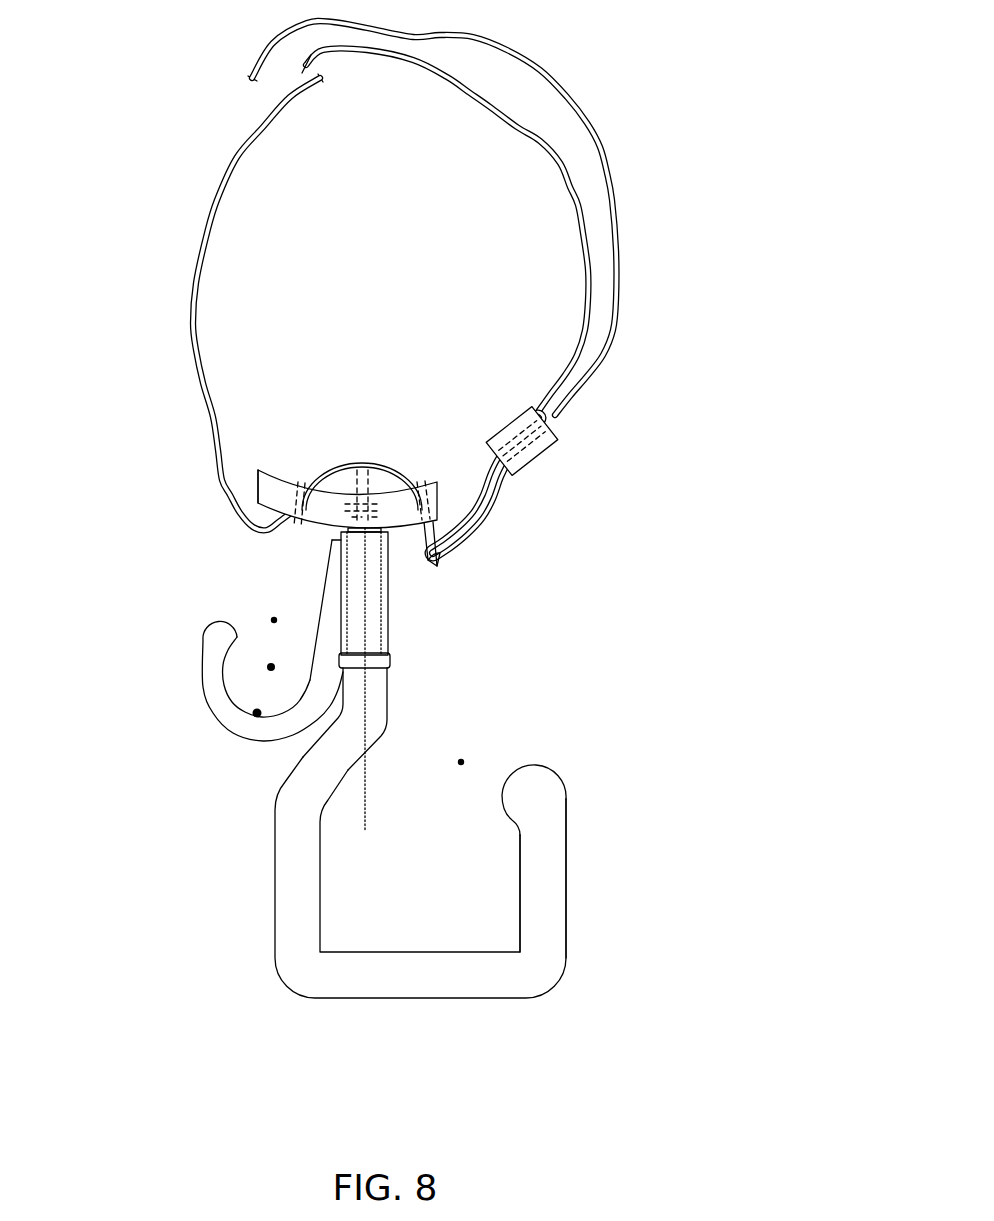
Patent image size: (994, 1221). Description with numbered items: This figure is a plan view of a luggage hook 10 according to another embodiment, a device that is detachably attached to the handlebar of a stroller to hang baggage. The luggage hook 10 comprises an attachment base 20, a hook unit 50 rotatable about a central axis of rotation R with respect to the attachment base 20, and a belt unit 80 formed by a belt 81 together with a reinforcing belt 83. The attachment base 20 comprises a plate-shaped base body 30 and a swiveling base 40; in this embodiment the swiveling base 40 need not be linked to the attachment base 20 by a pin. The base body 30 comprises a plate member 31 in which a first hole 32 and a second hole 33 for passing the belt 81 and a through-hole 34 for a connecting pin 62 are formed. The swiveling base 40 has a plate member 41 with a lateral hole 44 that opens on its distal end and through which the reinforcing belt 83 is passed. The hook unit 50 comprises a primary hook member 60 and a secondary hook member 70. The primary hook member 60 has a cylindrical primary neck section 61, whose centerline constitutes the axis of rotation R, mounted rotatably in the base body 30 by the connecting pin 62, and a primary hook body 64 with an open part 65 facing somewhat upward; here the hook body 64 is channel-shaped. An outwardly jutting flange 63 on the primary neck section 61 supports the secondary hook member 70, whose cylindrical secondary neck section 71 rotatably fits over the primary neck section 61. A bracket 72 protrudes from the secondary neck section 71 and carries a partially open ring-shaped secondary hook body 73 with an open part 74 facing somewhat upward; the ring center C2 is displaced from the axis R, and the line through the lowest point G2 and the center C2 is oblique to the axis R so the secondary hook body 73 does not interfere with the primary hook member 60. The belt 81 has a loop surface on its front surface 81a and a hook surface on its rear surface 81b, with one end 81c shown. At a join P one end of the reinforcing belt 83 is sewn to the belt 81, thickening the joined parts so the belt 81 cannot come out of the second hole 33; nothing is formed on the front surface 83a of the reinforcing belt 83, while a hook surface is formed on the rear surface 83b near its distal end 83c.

The luggage hook 10 is at (726, 152).
The attachment base 20 is at (274, 470).
The base body 30 is at (257, 487).
The plate member 31 is at (322, 534).
The first hole 32 is at (300, 498).
The second hole 33 is at (429, 498).
The through-hole 34 is at (384, 493).
The swiveling base 40 is at (551, 449).
The plate member 41 is at (514, 472).
The lateral hole 44 is at (560, 425).
The hook unit 50 is at (512, 664).
The primary hook member 60 is at (285, 885).
The primary neck section 61 is at (390, 640).
The connecting pin 62 is at (362, 462).
The flange 63 is at (392, 658).
The primary hook body 64 is at (540, 870).
The open part 65 is at (463, 760).
The secondary hook member 70 is at (198, 716).
The secondary neck section 71 is at (389, 600).
The bracket 72 is at (329, 590).
The secondary hook body 73 is at (205, 690).
The open part 74 is at (270, 617).
The belt unit 80 is at (198, 408).
The belt 81 is at (194, 343).
The front surface 81a is at (204, 227).
The rear surface 81b is at (220, 205).
The one end 81c is at (331, 84).
The reinforcing belt 83 is at (613, 313).
The front surface 83a is at (617, 194).
The rear surface 83b is at (598, 176).
The distal end 83c is at (251, 75).
The position of the center of the ring of the secondary hook body C2 is at (272, 652).
The lowest point of the secondary hook body G2 is at (257, 698).
The join P is at (441, 560).
The central axis of rotation R is at (367, 694).